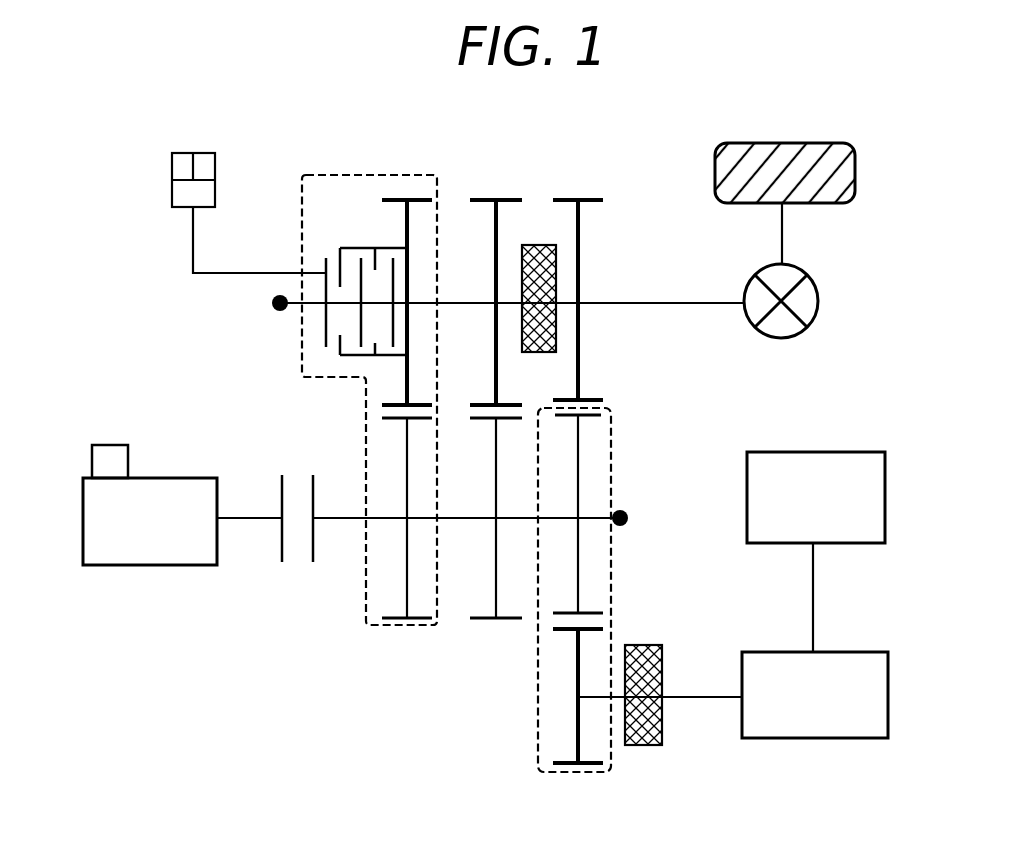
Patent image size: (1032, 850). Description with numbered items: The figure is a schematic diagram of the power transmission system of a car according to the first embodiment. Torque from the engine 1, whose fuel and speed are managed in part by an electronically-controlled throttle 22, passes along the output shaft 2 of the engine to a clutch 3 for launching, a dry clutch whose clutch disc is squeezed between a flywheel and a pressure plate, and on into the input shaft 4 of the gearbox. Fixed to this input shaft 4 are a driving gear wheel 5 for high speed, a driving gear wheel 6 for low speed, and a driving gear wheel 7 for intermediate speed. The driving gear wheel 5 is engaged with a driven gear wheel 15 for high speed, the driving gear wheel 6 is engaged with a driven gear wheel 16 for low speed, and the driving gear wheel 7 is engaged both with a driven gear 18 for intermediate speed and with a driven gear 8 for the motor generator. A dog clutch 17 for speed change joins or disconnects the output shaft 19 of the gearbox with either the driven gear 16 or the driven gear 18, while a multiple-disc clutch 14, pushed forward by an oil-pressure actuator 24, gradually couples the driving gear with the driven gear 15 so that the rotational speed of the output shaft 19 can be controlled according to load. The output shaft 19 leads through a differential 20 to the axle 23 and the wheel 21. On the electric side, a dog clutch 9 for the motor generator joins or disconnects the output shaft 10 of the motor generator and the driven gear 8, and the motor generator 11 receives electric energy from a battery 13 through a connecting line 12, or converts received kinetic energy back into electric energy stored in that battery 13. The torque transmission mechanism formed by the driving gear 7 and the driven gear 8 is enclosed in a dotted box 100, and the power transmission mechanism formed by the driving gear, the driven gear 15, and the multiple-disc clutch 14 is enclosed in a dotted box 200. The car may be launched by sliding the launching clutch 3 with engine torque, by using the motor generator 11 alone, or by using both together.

The engine 1 is at (98, 556).
The output shaft of the engine 2 is at (256, 521).
The clutch for launching 3 is at (290, 480).
The input shaft of the gearbox 4 is at (344, 520).
The driving gear wheel for high speed 5 is at (406, 590).
The driving gear wheel for low speed 6 is at (495, 590).
The driving gear wheel for intermediate speed 7 is at (578, 543).
The driven gear for the motor generator 8 is at (578, 740).
The dog clutch for the motor generator 9 is at (650, 748).
The output shaft of the motor generator 10 is at (707, 698).
The motor generator 11 is at (812, 738).
The electric line 12 is at (815, 600).
The battery 13 is at (803, 456).
The multiple-disc clutch 14 is at (347, 247).
The driven gear wheel for high speed 15 is at (407, 199).
The driven gear wheel for low speed 16 is at (493, 199).
The dog clutch for speed change 17 is at (534, 244).
The driven gear for intermediate speed 18 is at (580, 199).
The output shaft of the gearbox 19 is at (641, 302).
The differential 20 is at (813, 303).
The wheel 21 is at (797, 150).
The electronically-controlled throttle 22 is at (112, 456).
The axle 23 is at (783, 240).
The oil-pressure actuator 24 is at (184, 153).
The dotted box 100 is at (612, 470).
The dotted box 200 is at (301, 198).